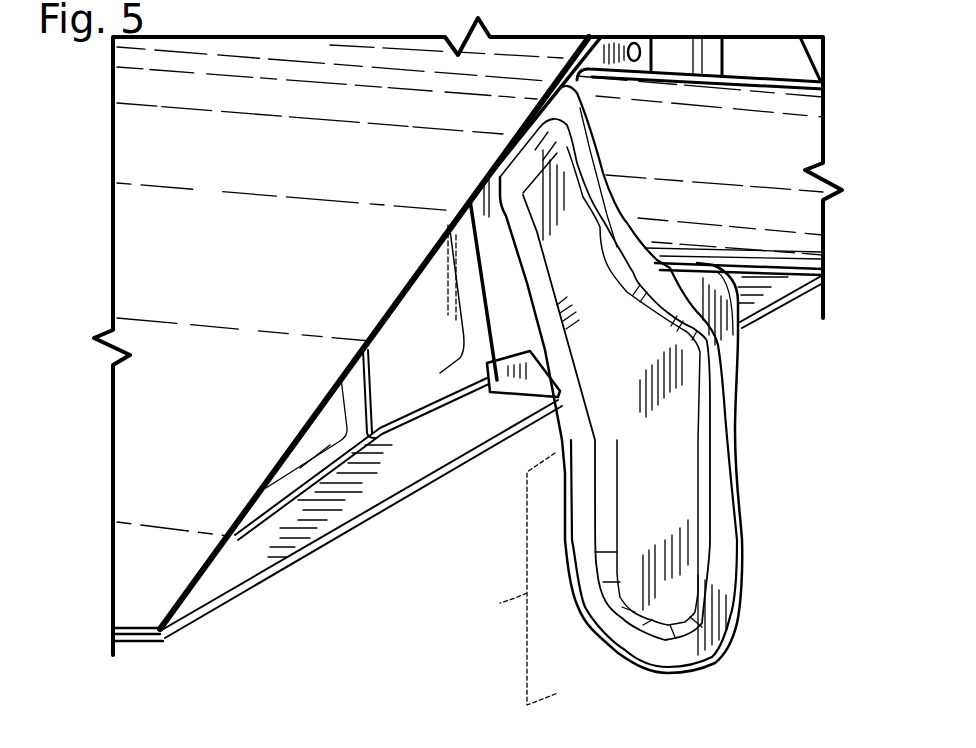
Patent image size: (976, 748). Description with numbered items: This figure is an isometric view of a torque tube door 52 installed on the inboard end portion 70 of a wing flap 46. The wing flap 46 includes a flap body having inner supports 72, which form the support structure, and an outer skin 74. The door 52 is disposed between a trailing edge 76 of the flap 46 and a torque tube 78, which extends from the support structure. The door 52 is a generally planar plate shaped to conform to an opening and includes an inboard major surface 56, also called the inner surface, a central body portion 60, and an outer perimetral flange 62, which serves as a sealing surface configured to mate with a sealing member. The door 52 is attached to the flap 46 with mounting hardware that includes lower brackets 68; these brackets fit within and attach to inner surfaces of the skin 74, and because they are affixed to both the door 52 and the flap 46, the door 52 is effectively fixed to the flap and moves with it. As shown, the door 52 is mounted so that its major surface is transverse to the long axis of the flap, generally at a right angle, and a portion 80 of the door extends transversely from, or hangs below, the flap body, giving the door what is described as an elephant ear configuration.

The wing flap 46 is at (229, 177).
The torque tube 78 is at (676, 169).
The inboard end portion 70 is at (384, 544).
The inner supports 72 is at (408, 388).
The outer skin 74 is at (218, 549).
The trailing edge 76 is at (140, 650).
The lower bracket 68 is at (523, 367).
The torque tube door 52 is at (735, 653).
The inboard major surface 56 is at (661, 444).
The central body portion 60 is at (631, 477).
The outer perimetral flange 62 is at (713, 476).
The portion of the door 80 is at (503, 579).